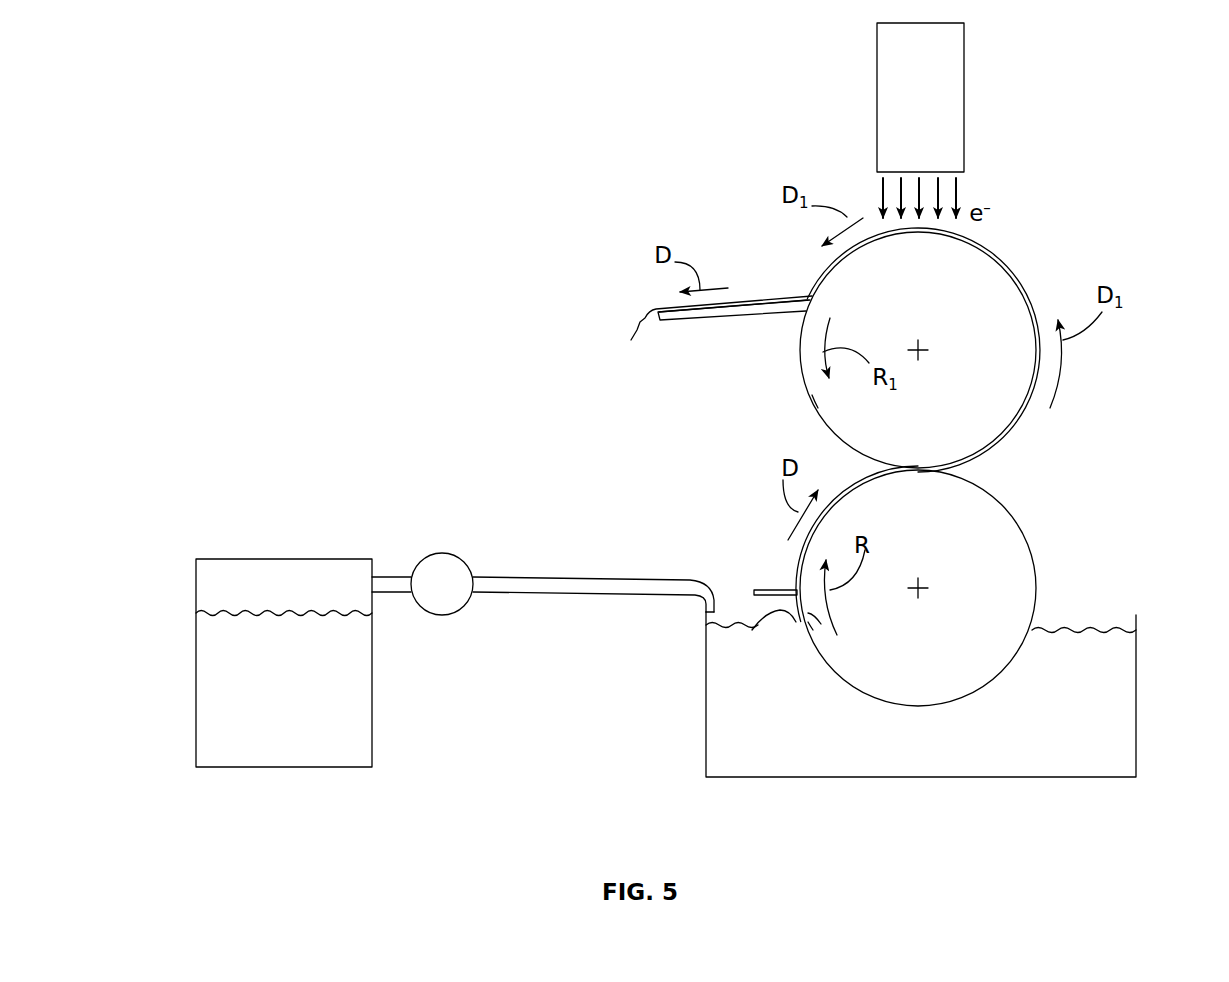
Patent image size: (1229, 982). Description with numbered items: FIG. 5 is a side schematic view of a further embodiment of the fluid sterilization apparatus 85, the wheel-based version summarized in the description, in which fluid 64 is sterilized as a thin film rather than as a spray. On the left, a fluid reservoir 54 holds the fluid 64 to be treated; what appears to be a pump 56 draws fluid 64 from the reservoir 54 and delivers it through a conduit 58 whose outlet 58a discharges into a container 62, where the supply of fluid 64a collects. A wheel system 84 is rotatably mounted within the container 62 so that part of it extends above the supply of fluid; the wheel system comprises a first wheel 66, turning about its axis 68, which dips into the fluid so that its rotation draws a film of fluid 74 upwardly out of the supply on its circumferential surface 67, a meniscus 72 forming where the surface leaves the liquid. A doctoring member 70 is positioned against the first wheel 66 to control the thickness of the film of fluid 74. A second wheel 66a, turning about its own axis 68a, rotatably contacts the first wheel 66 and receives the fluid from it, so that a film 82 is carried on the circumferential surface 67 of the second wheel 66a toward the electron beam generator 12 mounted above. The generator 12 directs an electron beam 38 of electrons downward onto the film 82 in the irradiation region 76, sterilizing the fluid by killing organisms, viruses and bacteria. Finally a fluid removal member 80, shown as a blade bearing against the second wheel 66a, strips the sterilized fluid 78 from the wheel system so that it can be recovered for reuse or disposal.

The electron beam generator 12 is at (964, 49).
The electron beam 38 is at (880, 191).
The fluid reservoir 54 is at (283, 570).
The pump 56 is at (440, 560).
The conduit 58 is at (550, 590).
The conduit outlet 58a is at (714, 592).
The coating pan 62 is at (998, 777).
The fluid 64 is at (897, 767).
The liquid coating in pan 64a is at (805, 760).
The applicator roller 66 is at (985, 668).
The transfer drum 66a is at (802, 367).
The roller surface 67 is at (818, 410).
The roller axis 68 is at (923, 590).
The drum axis 68a is at (921, 356).
The doctor blade 70 is at (769, 588).
The liquid meniscus 72 is at (768, 622).
The coating layer on roller 74 is at (800, 557).
The electron beam exposure zone 76 is at (1003, 173).
The cured film 78 is at (690, 316).
The stripping blade 80 is at (820, 278).
The coating layer on drum 82 is at (1015, 425).
The coating and curing station 84 is at (1145, 387).
The coating apparatus 85 is at (572, 170).